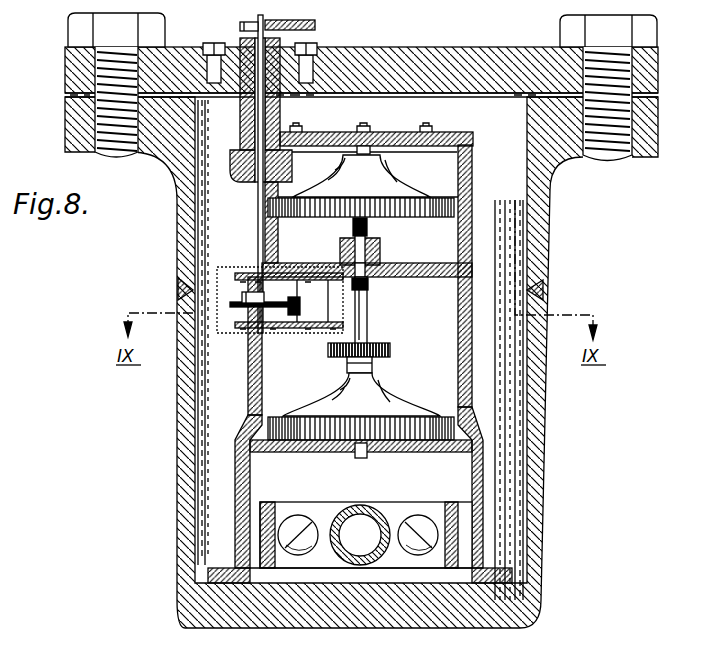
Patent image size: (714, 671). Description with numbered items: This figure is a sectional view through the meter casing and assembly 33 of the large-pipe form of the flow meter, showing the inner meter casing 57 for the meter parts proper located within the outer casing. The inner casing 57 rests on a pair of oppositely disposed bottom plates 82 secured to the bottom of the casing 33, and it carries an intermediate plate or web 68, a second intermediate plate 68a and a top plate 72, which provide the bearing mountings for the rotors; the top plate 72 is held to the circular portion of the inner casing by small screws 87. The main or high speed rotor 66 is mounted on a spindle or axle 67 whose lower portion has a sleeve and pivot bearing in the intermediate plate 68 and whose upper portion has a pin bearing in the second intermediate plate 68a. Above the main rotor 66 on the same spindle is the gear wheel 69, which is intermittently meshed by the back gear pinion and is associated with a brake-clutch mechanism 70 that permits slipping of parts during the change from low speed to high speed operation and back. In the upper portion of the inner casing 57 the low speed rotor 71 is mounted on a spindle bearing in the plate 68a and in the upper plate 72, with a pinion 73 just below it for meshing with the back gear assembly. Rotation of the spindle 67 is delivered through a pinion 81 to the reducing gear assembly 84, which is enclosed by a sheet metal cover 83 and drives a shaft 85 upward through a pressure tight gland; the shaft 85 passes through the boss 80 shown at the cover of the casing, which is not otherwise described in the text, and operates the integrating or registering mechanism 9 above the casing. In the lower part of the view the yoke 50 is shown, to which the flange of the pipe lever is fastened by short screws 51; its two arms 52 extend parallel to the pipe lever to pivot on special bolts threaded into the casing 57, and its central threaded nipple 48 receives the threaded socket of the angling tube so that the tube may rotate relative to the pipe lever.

The integrating or registering mechanism 9 is at (214, 35).
The meter casing and assembly 33 is at (588, 260).
The bushing boss 80 is at (243, 124).
The shaft 85 is at (257, 233).
The inner meter casing 57 is at (248, 380).
The top plate 72 is at (330, 132).
The small screws 87 is at (445, 122).
The low speed rotor 71 is at (292, 214).
The pinion 73 is at (370, 229).
The second intermediate plate 68a is at (445, 277).
The spindle or axle 67 is at (368, 310).
The pinion 81 is at (369, 285).
The gear wheel 69 is at (391, 350).
The brake-clutch mechanism 70 is at (349, 365).
The main or high speed rotor 66 is at (283, 415).
The intermediate plate or web 68 is at (331, 452).
The sheet metal cover 83 is at (240, 334).
The reducing gear assembly 84 is at (322, 315).
The yoke 50 is at (395, 506).
The short screws 51 is at (296, 516).
The central projecting portion or nipple 48 is at (356, 508).
The arms 52 is at (277, 567).
The bottom portions or plates 82 is at (208, 575).